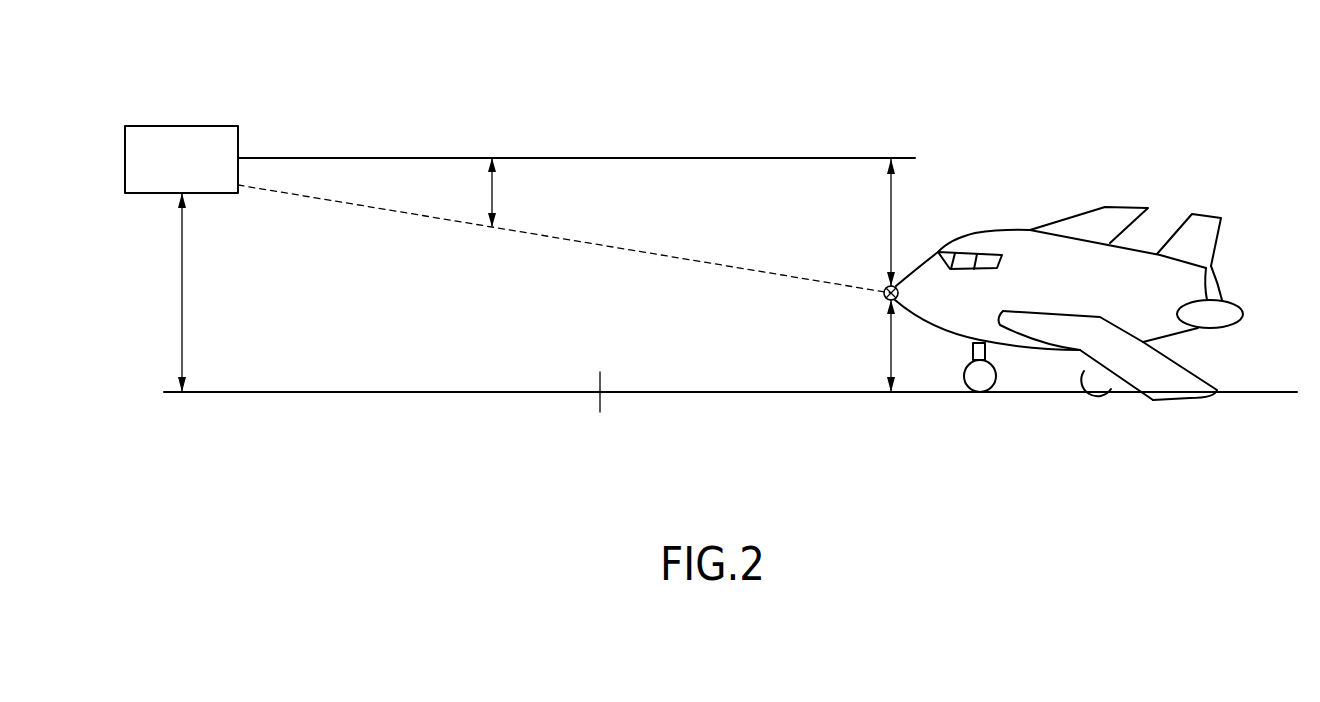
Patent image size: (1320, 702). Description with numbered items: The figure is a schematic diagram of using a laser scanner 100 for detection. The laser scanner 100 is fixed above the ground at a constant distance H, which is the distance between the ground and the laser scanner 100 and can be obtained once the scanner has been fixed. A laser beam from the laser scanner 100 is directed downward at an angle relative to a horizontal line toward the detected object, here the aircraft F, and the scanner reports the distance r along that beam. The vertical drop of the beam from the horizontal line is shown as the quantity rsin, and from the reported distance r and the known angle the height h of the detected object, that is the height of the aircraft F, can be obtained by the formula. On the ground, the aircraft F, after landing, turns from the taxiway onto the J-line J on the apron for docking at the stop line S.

The laser scanner 100 is at (181, 125).
The aircraft F is at (1232, 266).
The stop line S is at (598, 405).
The J-line J is at (752, 393).
The distance between the ground and the laser scanner H is at (169, 292).
The height of the detected object h is at (900, 346).
The reported distance r is at (604, 246).
The vertical offset r·sinθ = r·sin(δ·N) rsin is at (1006, 222).